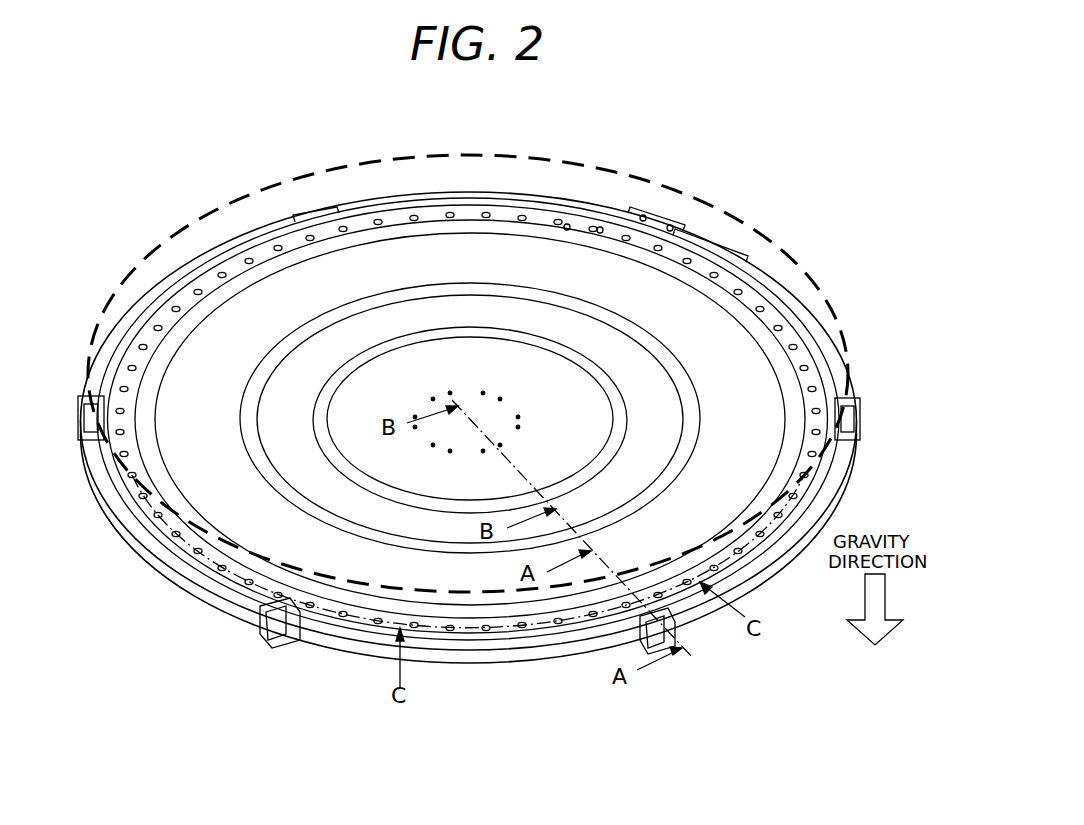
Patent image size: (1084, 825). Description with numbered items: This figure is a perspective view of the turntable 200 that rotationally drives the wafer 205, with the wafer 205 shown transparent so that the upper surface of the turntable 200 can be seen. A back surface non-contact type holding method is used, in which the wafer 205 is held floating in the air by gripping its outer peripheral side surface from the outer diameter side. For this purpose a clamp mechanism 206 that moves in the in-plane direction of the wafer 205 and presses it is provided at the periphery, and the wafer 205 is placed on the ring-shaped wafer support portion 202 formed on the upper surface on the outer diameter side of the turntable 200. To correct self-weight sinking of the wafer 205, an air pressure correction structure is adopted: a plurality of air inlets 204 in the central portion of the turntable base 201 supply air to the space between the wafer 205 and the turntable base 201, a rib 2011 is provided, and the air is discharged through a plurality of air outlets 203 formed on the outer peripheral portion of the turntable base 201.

The turntable 200 is at (763, 197).
The turntable base 201 is at (362, 258).
The rib 2011 is at (353, 362).
The wafer support portion 202 is at (807, 334).
The air outlet 203 is at (741, 300).
The air inlet 204 is at (482, 387).
The wafer 205 is at (643, 193).
The clamp mechanism 206 is at (650, 652).